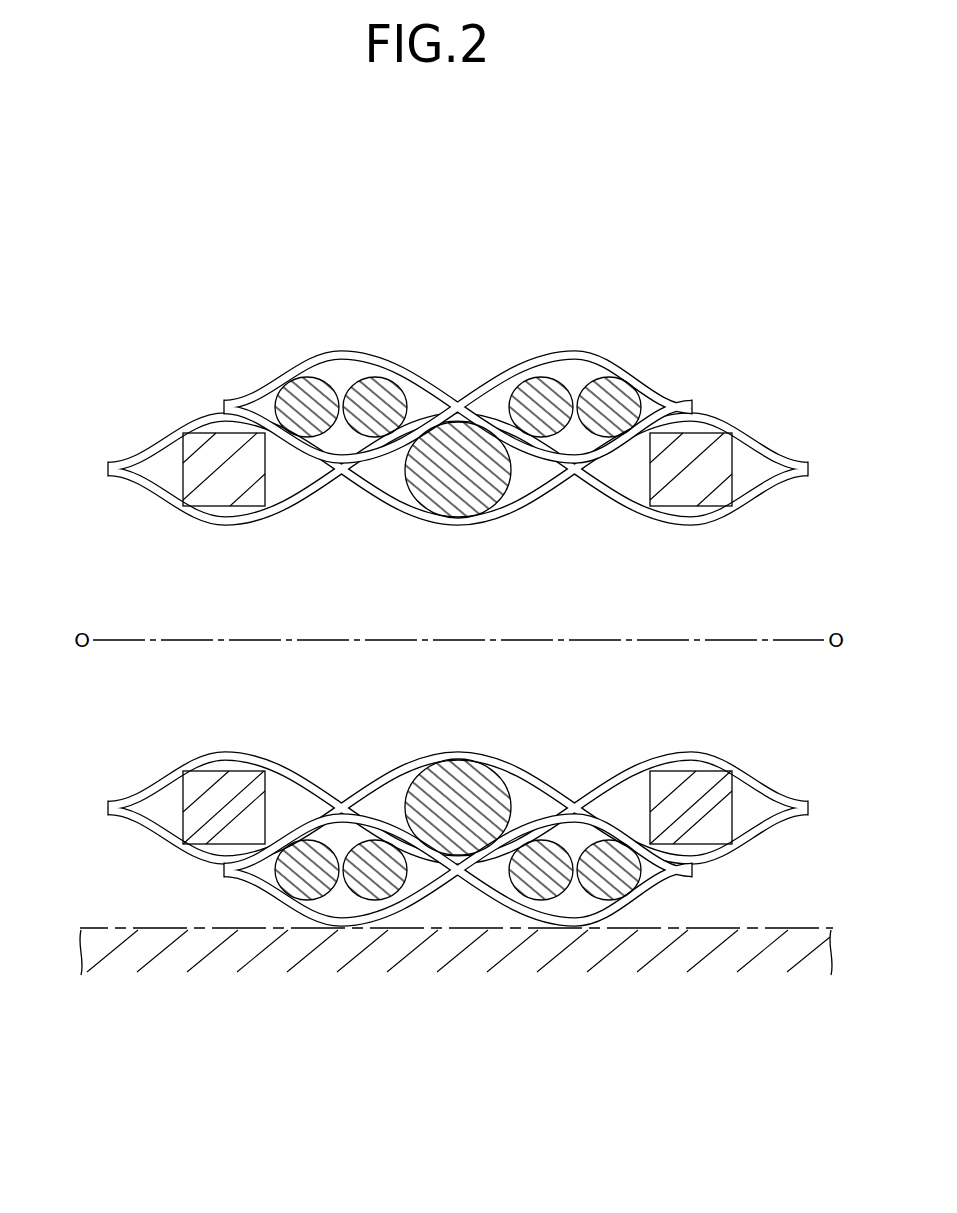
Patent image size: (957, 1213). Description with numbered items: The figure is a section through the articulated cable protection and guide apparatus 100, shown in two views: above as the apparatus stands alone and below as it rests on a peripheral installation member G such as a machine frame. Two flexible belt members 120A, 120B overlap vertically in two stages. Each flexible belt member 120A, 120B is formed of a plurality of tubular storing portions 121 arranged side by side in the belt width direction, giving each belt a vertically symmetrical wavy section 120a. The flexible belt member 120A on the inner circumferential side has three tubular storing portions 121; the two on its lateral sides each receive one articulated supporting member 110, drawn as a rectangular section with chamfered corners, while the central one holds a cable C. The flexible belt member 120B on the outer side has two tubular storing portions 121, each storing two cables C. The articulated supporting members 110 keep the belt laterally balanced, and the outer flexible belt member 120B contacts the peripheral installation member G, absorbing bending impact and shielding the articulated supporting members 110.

The articulated cable protection and guide apparatus 100 is at (760, 333).
The articulated supporting member 110 is at (210, 497).
The flexible belt member 120A is at (670, 587).
The flexible belt member 120B is at (355, 289).
The wavy section 120a is at (423, 405).
The tubular storing portion 121 is at (345, 362).
The cable C is at (297, 385).
The peripheral installation member G is at (793, 997).